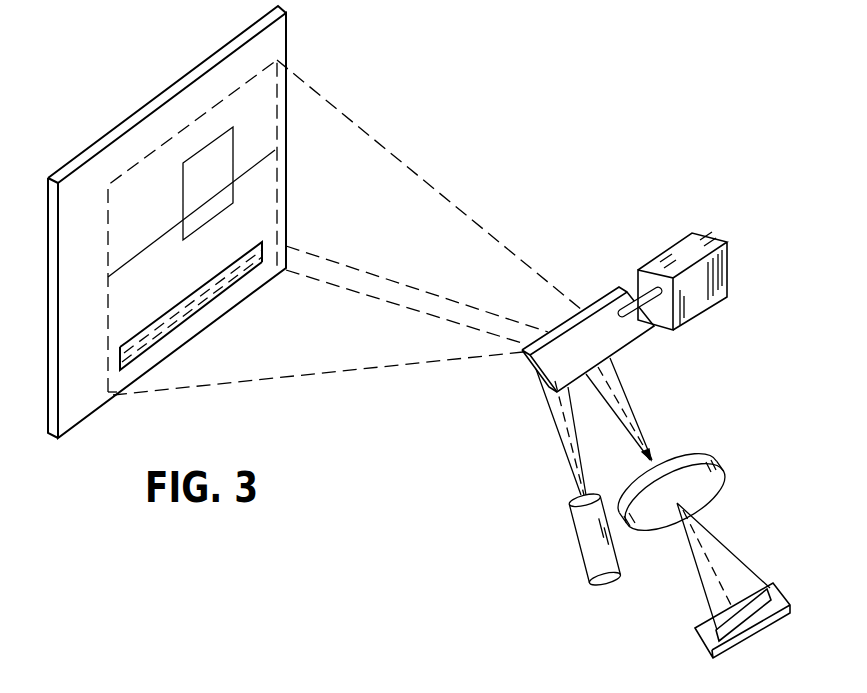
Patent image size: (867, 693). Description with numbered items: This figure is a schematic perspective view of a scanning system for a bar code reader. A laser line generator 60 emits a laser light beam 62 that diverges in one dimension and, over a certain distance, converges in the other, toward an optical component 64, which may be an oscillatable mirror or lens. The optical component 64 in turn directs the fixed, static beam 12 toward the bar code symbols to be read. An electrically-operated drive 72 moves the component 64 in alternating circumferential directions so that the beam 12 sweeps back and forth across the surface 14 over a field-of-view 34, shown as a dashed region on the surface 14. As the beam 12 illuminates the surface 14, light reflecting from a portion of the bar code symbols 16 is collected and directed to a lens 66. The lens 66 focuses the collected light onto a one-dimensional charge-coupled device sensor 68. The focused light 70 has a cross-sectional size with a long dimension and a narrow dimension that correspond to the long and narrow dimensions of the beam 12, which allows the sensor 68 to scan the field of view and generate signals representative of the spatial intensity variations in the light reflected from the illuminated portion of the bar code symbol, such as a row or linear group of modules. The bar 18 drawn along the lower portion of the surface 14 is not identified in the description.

The beam 12 is at (146, 250).
The surface 14 is at (272, 41).
The bar code symbols 16 is at (210, 158).
The light bar 18 is at (124, 347).
The field-of-view 34 is at (141, 162).
The laser line generator 60 is at (587, 543).
The laser light beam 62 is at (560, 412).
The optical component 64 is at (603, 353).
The lens 66 is at (708, 488).
The one-dimensional charge-coupled device (CCD) sensor 68 is at (769, 586).
The focused light 70 is at (715, 654).
The electrically-operated drive 72 is at (709, 305).